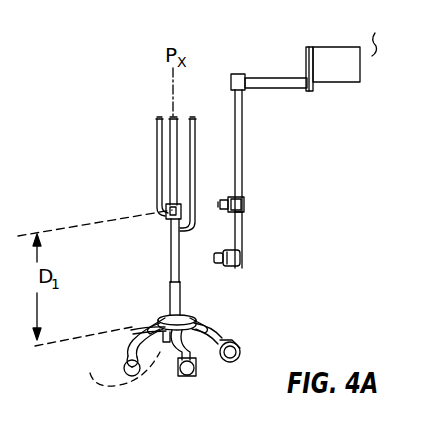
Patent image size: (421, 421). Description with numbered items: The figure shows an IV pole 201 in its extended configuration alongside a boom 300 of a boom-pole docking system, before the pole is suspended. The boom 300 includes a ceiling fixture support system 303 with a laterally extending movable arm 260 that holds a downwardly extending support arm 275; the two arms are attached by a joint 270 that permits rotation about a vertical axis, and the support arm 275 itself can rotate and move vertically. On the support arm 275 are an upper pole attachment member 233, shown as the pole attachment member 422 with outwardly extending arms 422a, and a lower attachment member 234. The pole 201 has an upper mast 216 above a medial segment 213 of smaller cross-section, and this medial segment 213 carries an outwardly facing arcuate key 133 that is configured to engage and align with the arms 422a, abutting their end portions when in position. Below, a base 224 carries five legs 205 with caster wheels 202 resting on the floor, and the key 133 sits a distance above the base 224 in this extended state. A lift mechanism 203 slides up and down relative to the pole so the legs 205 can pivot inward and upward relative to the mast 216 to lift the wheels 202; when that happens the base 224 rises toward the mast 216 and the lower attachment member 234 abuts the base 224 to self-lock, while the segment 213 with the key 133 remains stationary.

The mast 216 is at (173, 173).
The IV pole 201 is at (118, 174).
The medial segment 213 is at (173, 231).
The key 133 is at (168, 213).
The base 224 is at (193, 318).
The legs 205 is at (147, 323).
The lift mechanism 203 is at (115, 369).
The wheels 202 is at (195, 375).
The downwardly extending support arm 275 is at (243, 128).
The laterally extending movable arm 260 is at (265, 82).
The joint 270 is at (233, 74).
The ceiling fixture support system 303 is at (350, 78).
The boom 300 is at (349, 88).
The pole attachment member 422 is at (246, 203).
The outwardly extending arms 422a is at (224, 197).
The upper pole attachment member 233 is at (246, 206).
The lower attachment member 234 is at (241, 257).